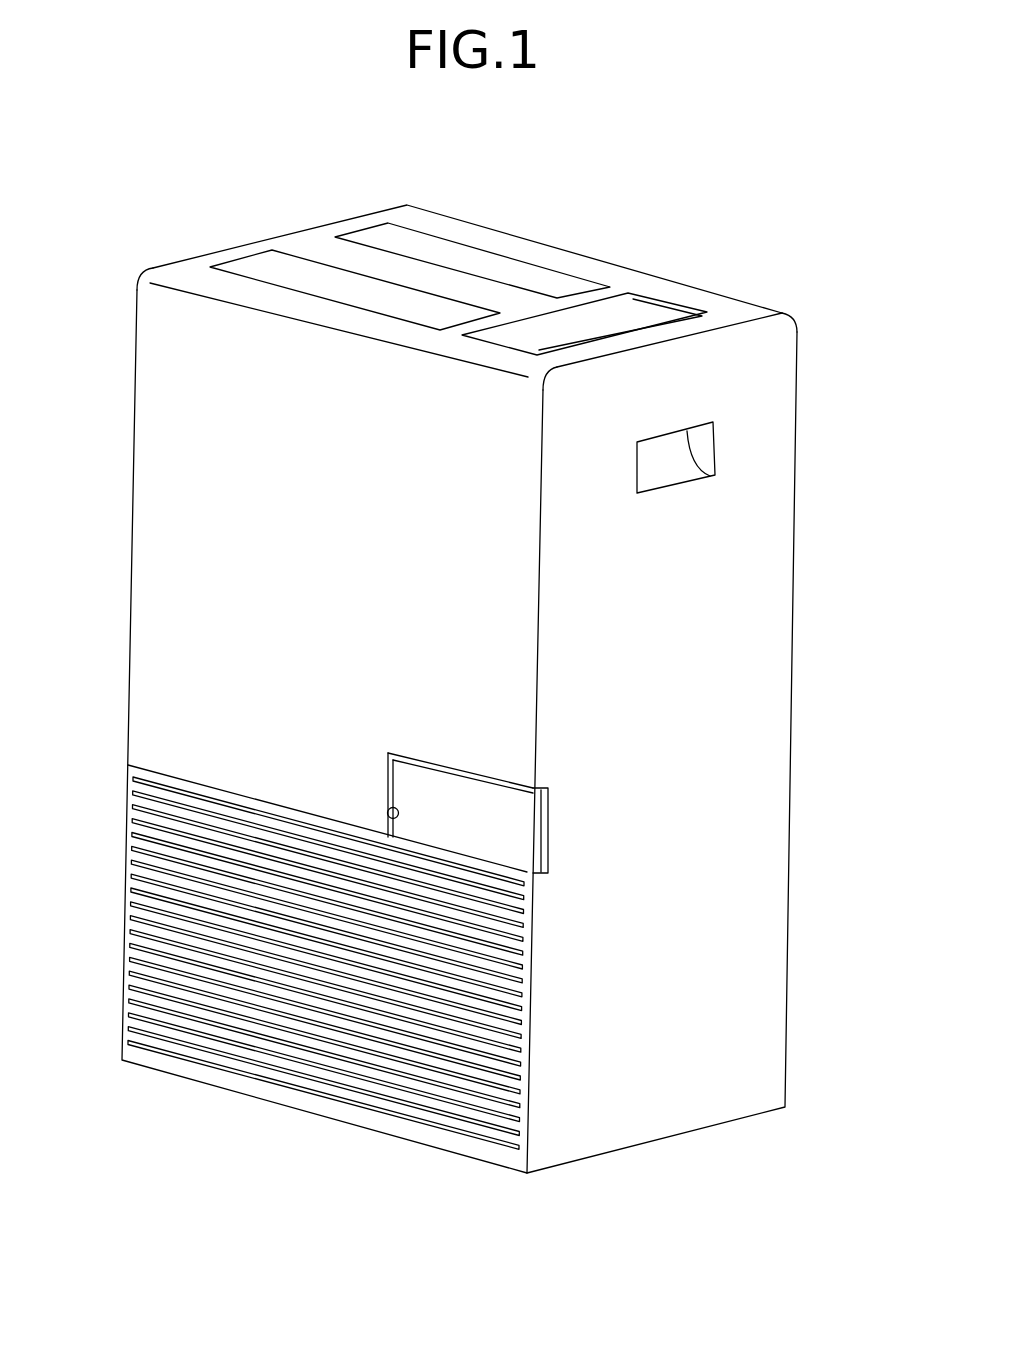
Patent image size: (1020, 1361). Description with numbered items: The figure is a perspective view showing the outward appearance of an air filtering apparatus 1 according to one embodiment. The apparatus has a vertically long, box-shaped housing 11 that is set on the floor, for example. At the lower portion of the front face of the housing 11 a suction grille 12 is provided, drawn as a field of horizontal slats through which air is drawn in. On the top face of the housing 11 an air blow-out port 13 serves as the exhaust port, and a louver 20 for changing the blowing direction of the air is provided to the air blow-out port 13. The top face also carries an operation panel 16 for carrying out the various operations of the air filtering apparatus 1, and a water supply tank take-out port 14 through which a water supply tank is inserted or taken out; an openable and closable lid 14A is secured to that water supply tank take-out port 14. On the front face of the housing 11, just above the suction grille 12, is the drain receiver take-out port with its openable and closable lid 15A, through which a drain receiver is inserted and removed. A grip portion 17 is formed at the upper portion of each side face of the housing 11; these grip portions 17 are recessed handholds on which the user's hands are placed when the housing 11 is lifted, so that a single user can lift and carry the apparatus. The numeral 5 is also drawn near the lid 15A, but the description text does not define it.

The air filtering apparatus 1 is at (863, 203).
The operation unit 5 is at (388, 814).
The housing 11 is at (797, 342).
The suction grille 12 is at (128, 900).
The air blow-out port 13 is at (298, 262).
The water supply tank take-out port 14 is at (634, 297).
The lid 14A is at (642, 313).
The lid 15A is at (410, 780).
The operation panel 16 is at (465, 252).
The grip portion 17 is at (710, 446).
The louver 20 is at (268, 272).